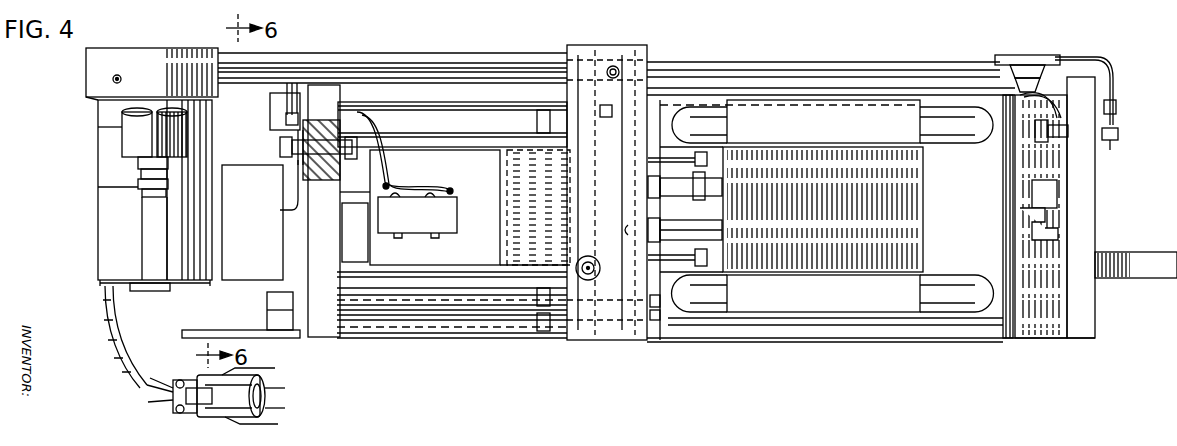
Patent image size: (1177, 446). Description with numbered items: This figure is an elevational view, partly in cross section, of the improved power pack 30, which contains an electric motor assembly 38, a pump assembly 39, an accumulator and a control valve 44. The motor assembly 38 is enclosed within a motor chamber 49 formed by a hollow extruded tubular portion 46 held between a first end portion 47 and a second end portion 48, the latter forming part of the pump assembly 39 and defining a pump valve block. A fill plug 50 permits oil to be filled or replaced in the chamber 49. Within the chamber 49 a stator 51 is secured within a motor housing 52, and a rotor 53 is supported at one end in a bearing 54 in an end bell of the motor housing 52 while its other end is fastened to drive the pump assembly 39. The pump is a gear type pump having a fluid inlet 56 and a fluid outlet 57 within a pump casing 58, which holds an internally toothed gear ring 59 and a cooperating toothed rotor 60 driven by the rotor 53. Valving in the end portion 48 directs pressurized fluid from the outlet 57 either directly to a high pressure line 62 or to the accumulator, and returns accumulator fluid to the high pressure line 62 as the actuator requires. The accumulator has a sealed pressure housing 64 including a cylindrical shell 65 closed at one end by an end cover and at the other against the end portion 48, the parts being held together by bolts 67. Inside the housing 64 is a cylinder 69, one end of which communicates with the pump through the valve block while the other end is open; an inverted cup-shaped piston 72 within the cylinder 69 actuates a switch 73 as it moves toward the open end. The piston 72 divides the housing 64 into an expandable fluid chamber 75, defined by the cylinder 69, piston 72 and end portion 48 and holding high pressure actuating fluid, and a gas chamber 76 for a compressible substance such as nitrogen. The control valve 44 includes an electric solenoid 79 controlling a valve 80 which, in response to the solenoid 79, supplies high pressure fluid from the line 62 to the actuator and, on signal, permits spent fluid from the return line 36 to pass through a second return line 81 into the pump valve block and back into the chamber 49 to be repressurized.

The power pack 30 is at (838, 49).
The return line 36 is at (137, 171).
The electric motor assembly 38 is at (890, 88).
The pump assembly 39 is at (665, 275).
The control valve 44 is at (84, 103).
The hollow extruded tubular portion 46 is at (953, 331).
The first end portion 47 is at (1085, 181).
The second end portion 48 is at (603, 50).
The motor chamber 49 is at (1055, 260).
The fill plug 50 is at (1055, 57).
The stator 51 is at (787, 307).
The motor housing 52 is at (1010, 326).
The rotor 53 is at (908, 180).
The bearing 54 is at (1050, 218).
The fluid inlet 56 is at (675, 192).
The fluid outlet 57 is at (627, 236).
The pump casing 58 is at (680, 233).
The internally toothed gear ring 59 is at (670, 180).
The toothed rotor 60 is at (690, 254).
The high pressure line 62 is at (405, 55).
The sealed pressure housing 64 is at (392, 343).
The cylindrical shell 65 is at (462, 333).
The bolts 67 is at (277, 112).
The cylinder 69 is at (460, 142).
The piston 72 is at (497, 183).
The switch 73 is at (445, 222).
The expandable fluid chamber 75 is at (549, 262).
The gas chamber 76 is at (364, 254).
The electric solenoid 79 is at (110, 232).
The valve 80 is at (95, 68).
The second return line 81 is at (352, 52).